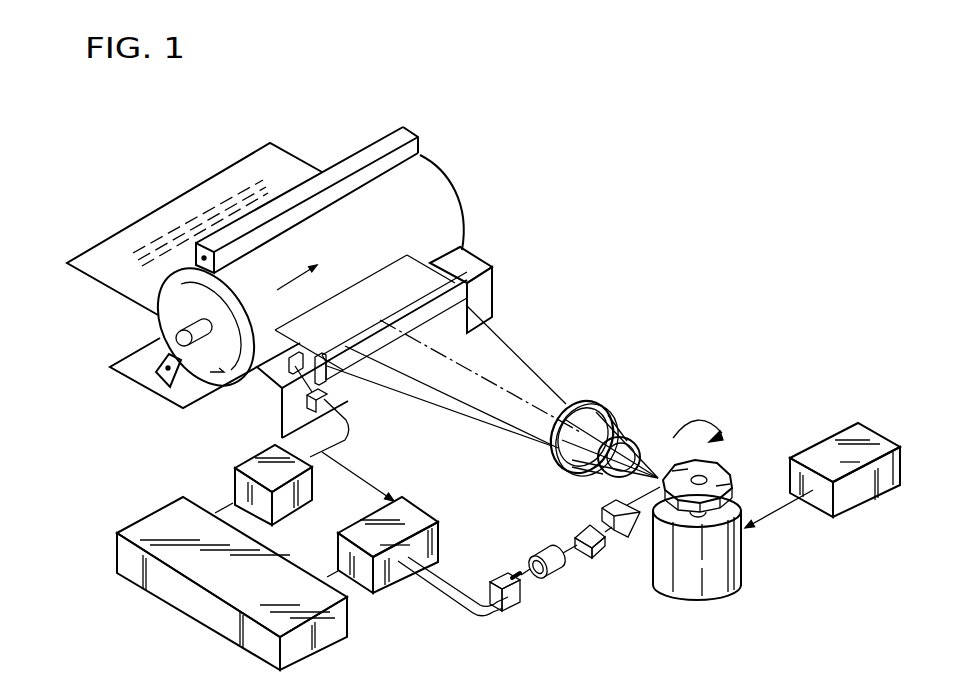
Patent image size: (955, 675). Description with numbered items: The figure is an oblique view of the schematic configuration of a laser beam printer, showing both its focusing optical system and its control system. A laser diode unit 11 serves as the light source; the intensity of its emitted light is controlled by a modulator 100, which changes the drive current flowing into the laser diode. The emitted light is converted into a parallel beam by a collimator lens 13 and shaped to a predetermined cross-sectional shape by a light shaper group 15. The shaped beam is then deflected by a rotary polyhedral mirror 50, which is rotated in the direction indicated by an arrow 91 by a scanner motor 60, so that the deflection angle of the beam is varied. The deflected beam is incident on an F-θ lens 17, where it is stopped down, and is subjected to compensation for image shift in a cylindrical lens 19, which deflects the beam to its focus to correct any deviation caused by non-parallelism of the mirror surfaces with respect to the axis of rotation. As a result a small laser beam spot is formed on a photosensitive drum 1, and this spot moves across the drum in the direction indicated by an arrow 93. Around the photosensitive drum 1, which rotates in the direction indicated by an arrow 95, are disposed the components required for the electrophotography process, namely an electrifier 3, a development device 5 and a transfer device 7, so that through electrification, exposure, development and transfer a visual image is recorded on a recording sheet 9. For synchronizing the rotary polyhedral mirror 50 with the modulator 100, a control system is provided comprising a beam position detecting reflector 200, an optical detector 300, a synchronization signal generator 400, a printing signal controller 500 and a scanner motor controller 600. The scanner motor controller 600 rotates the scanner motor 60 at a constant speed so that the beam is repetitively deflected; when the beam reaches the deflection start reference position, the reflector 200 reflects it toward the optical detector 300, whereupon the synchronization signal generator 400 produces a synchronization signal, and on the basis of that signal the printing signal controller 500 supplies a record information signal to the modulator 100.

The photosensitive drum 1 is at (456, 181).
The electrifier 3 is at (410, 128).
The development device 5 is at (493, 298).
The transfer device 7 is at (160, 373).
The recording sheet 9 is at (100, 271).
The laser diode unit 11 is at (513, 606).
The collimator lens 13 is at (553, 577).
The light shaper group 15 is at (628, 532).
The F-θ lens 17 is at (587, 400).
The cylindrical lens 19 is at (466, 276).
The rotary polyhedral mirror 50 is at (718, 463).
The scanner motor 60 is at (741, 572).
The arrow 91 is at (703, 419).
The arrow 93 is at (299, 286).
The arrow 95 is at (214, 312).
The modulator 100 is at (423, 503).
The beam position detecting reflector 200 is at (258, 390).
The optical detector 300 is at (328, 398).
The synchronization signal generator 400 is at (302, 499).
The printing signal controller 500 is at (186, 615).
The scanner motor controller 600 is at (878, 431).